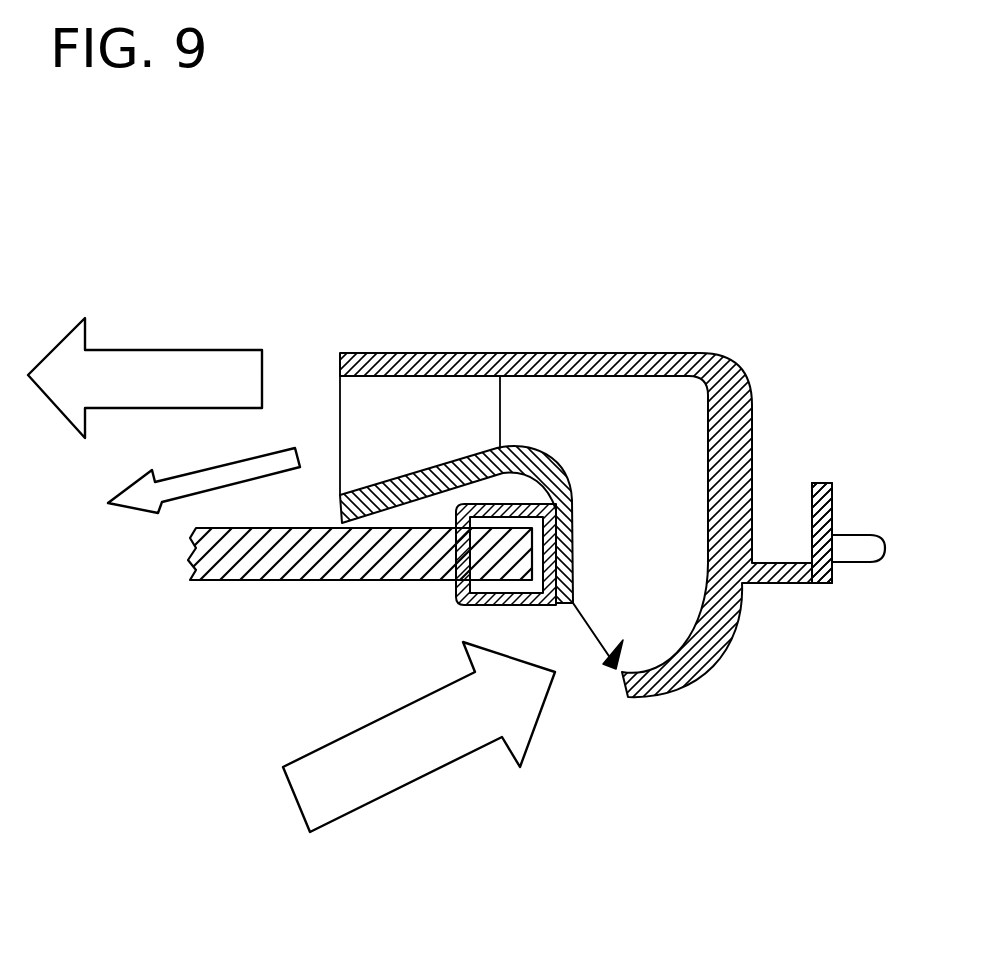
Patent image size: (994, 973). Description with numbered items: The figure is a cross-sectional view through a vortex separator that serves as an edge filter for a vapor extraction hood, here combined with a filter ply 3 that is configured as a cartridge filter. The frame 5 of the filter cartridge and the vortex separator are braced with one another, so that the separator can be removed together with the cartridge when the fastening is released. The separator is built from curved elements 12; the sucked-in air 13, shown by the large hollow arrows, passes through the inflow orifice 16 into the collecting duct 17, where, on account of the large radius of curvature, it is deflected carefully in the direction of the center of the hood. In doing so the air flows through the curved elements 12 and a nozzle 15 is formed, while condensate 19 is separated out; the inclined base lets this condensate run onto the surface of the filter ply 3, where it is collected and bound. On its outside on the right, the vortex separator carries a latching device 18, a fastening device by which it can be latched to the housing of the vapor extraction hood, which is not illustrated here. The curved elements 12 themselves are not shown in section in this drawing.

The filter ply 3 is at (237, 562).
The frame 5 is at (513, 502).
The curved elements 12 is at (413, 400).
The sucked-in air 13 is at (183, 396).
The nozzle 15 is at (426, 437).
The inflow orifice 16 is at (608, 668).
The collecting duct 17 is at (672, 500).
The latching device 18 is at (861, 548).
The condensate 19 is at (143, 497).